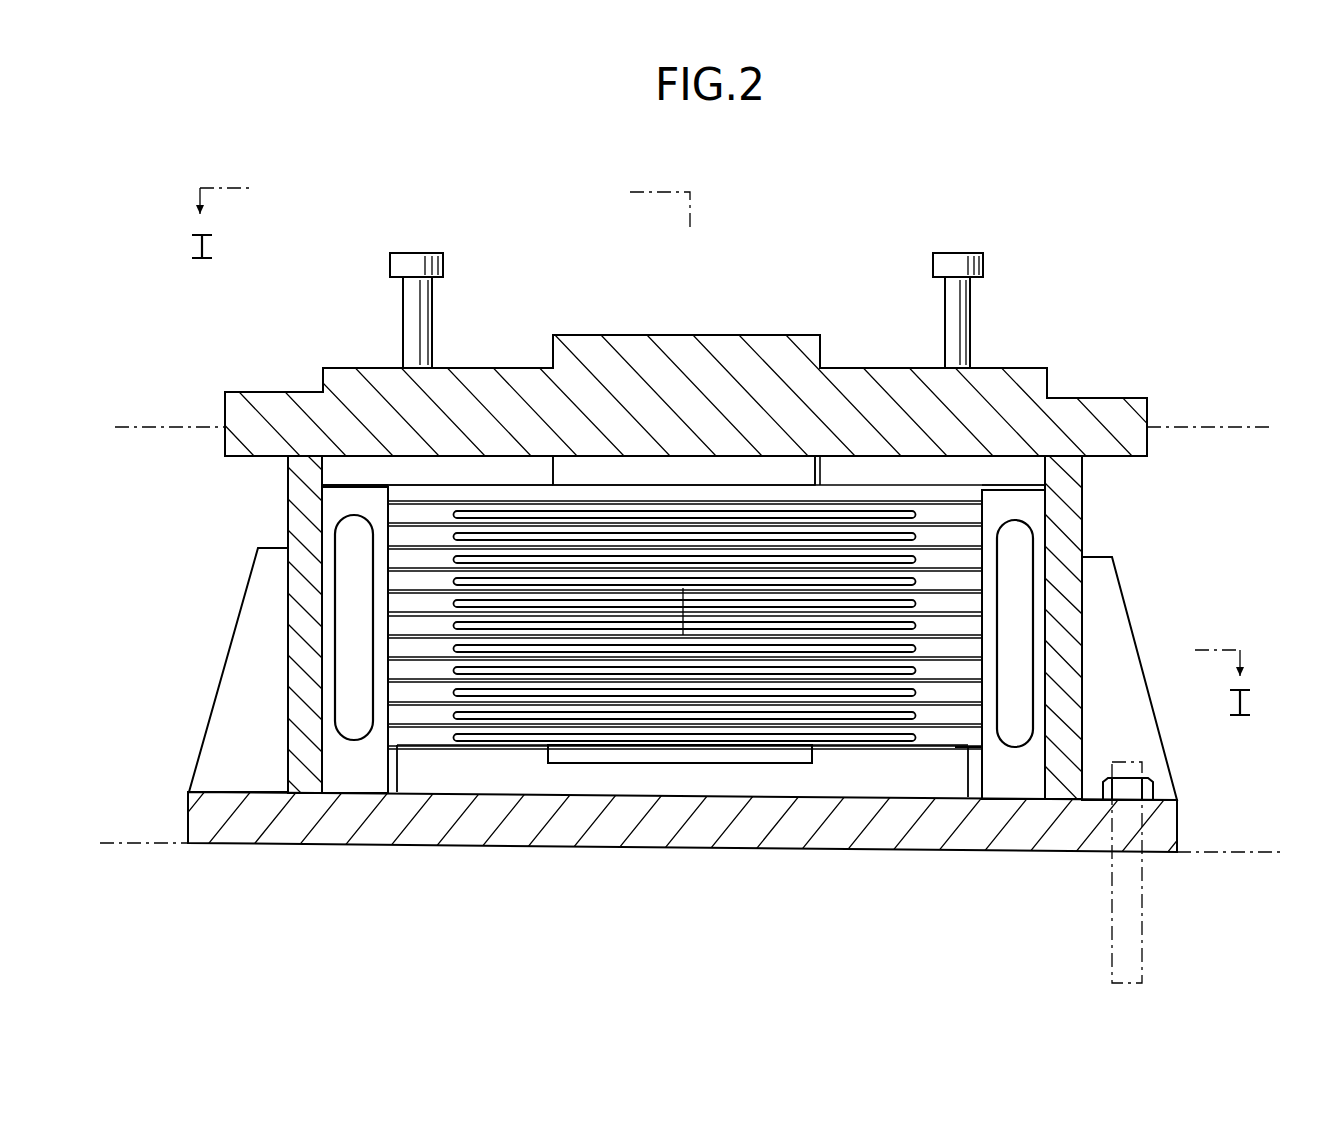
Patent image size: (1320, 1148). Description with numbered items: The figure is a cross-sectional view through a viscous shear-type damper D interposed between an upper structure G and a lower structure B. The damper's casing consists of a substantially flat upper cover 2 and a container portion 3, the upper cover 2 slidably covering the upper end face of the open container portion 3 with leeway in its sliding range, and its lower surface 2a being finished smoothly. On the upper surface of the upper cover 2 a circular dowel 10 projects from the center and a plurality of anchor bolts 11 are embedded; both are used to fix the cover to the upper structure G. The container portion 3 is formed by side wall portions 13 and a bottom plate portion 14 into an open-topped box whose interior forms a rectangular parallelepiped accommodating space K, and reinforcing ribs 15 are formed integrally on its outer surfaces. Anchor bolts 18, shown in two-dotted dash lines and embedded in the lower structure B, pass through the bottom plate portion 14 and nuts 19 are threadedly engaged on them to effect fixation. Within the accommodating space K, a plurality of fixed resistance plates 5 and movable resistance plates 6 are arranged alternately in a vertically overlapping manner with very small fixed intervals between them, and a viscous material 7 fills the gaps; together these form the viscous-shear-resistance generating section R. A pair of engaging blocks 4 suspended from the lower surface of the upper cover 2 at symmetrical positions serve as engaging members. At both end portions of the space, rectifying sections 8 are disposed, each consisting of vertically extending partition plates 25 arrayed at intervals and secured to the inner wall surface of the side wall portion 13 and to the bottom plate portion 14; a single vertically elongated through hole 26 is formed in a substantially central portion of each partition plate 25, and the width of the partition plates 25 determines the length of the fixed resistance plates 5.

The upper cover 2 is at (848, 365).
The lower surface 2a is at (628, 470).
The container portion 3 is at (1086, 508).
The engaging block 4 is at (627, 766).
The fixed resistance plate 5 is at (951, 534).
The movable resistance plate 6 is at (748, 556).
The viscous material 7 is at (460, 492).
The rectifying section 8 is at (363, 480).
The circular dowel 10 is at (553, 350).
The anchor bolt 11 is at (410, 256).
The side wall portion 13 is at (290, 488).
The bottom plate portion 14 is at (795, 832).
The reinforcing rib 15 is at (252, 590).
The anchor bolt 18 is at (1142, 918).
The nut 19 is at (1152, 776).
The partition plate 25 is at (340, 762).
The through hole 26 is at (335, 622).
The accommodating space K is at (865, 470).
The upper structure G is at (1228, 432).
The viscous shear-type damper D is at (919, 194).
The viscous-shear-resistance generating section R is at (489, 753).
The lower structure B is at (1258, 848).